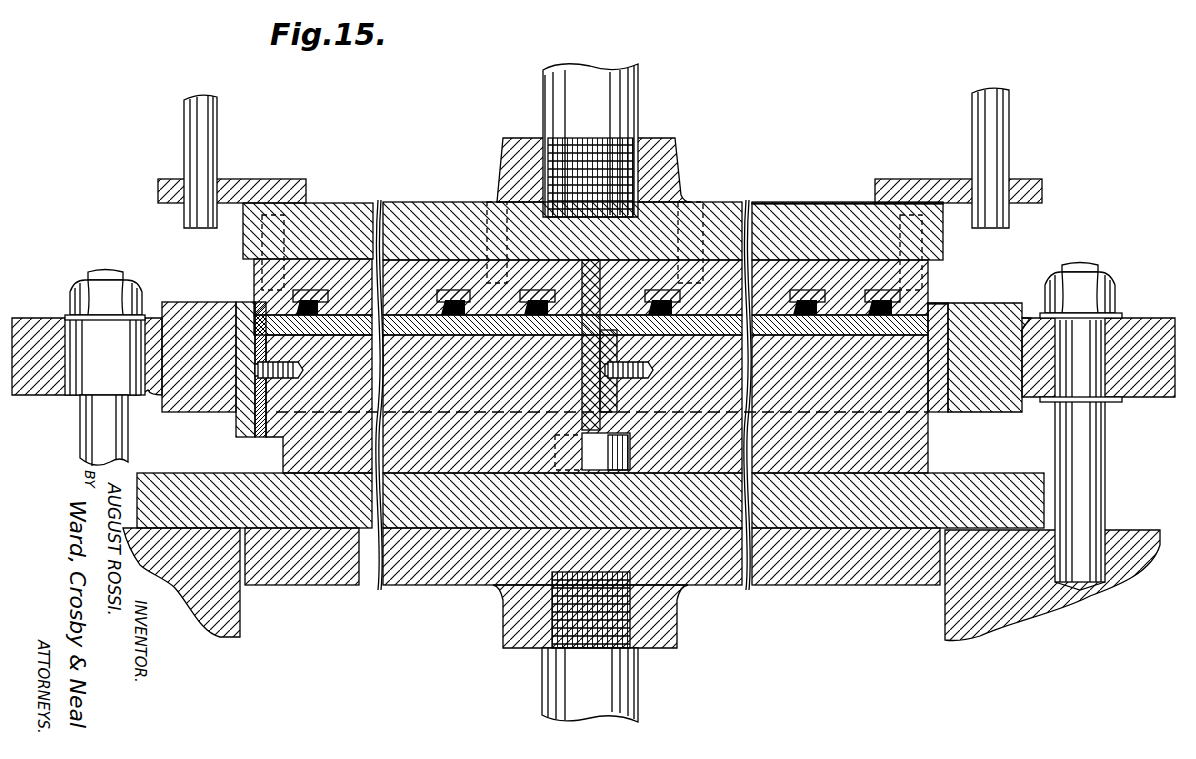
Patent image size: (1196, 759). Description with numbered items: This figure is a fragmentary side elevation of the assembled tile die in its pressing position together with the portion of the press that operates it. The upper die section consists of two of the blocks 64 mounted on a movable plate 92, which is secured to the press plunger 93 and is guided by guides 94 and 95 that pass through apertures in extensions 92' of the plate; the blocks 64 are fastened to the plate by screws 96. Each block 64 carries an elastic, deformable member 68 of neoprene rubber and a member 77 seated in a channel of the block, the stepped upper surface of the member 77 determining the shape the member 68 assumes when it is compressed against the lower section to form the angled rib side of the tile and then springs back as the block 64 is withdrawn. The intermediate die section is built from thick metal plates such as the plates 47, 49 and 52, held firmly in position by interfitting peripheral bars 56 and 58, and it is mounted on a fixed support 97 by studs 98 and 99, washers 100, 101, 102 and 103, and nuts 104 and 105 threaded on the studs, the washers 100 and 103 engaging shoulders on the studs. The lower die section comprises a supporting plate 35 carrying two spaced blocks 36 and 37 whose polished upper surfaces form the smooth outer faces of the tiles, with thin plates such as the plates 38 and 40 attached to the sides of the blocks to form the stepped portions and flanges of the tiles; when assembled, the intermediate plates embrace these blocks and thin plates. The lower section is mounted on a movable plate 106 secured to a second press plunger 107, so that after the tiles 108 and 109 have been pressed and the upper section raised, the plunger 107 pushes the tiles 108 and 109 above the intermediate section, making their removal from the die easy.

The supporting plate 35 is at (1010, 478).
The block 36 is at (290, 452).
The block 37 is at (930, 455).
The thin plate 38 is at (258, 430).
The thin plate 40 is at (592, 451).
The thick metal plate 47 is at (243, 415).
The thick metal plate 49 is at (599, 345).
The thick metal plate 52 is at (933, 413).
The peripheral bar 56 is at (180, 415).
The peripheral bar 58 is at (980, 413).
The block 64 is at (256, 265).
The elastic deformable member 68 is at (300, 290).
The channel member 77 is at (322, 290).
The movable plate 92 is at (663, 216).
The extension of the plate 92' is at (600, 173).
The press plunger 93 is at (640, 100).
The guide 94 is at (218, 130).
The guide 95 is at (975, 118).
The screw 96 is at (260, 225).
The fixed support 97 is at (230, 615).
The stud 98 is at (90, 427).
The stud 99 is at (1106, 455).
The washer 100 is at (72, 395).
The washer 101 is at (65, 315).
The washer 102 is at (1125, 313).
The washer 103 is at (1120, 403).
The nut 104 is at (70, 290).
The nut 105 is at (1112, 285).
The movable plate 106 is at (708, 585).
The press plunger 107 is at (640, 680).
The tile 108 is at (275, 312).
The tile 109 is at (935, 310).